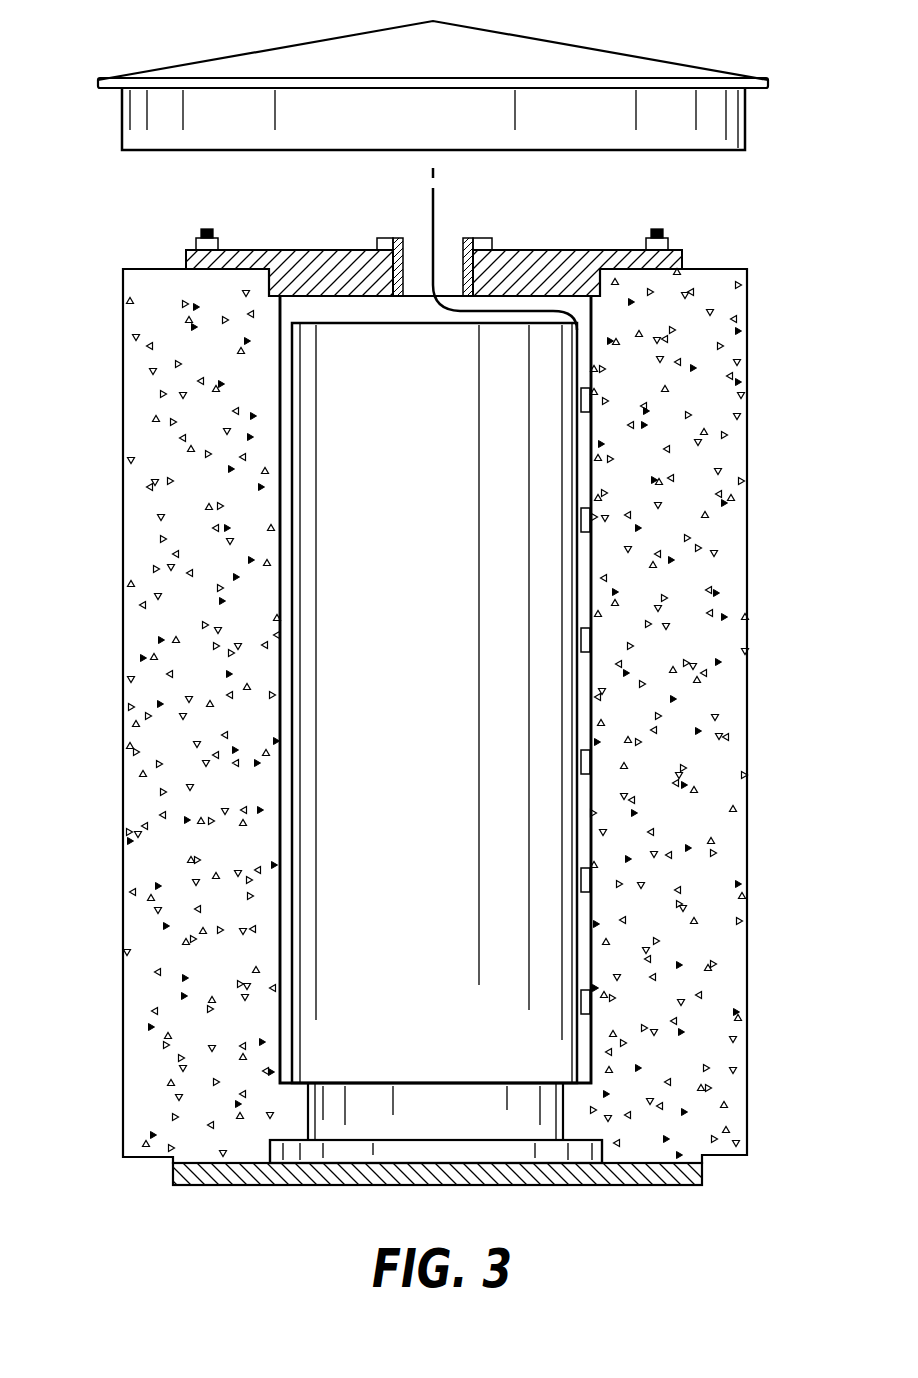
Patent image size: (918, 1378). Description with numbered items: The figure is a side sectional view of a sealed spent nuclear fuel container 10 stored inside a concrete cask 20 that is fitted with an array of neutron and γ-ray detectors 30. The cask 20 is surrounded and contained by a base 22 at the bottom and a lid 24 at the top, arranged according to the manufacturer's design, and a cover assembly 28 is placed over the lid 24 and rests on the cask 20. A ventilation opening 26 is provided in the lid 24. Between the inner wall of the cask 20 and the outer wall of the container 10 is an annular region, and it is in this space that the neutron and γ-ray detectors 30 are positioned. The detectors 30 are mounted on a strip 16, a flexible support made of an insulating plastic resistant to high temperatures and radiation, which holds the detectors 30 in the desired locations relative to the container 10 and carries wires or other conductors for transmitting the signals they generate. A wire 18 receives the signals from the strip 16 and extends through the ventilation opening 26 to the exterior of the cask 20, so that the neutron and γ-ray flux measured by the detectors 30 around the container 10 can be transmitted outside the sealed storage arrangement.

The spent nuclear fuel container 10 is at (446, 632).
The strip 16 is at (583, 706).
The wire 18 is at (433, 207).
The concrete cask 20 is at (135, 637).
The base 22 is at (173, 1175).
The lid 24 is at (248, 258).
The ventilation opening 26 is at (385, 240).
The cover assembly 28 is at (550, 48).
The neutron and γ-ray detectors 30 is at (587, 637).